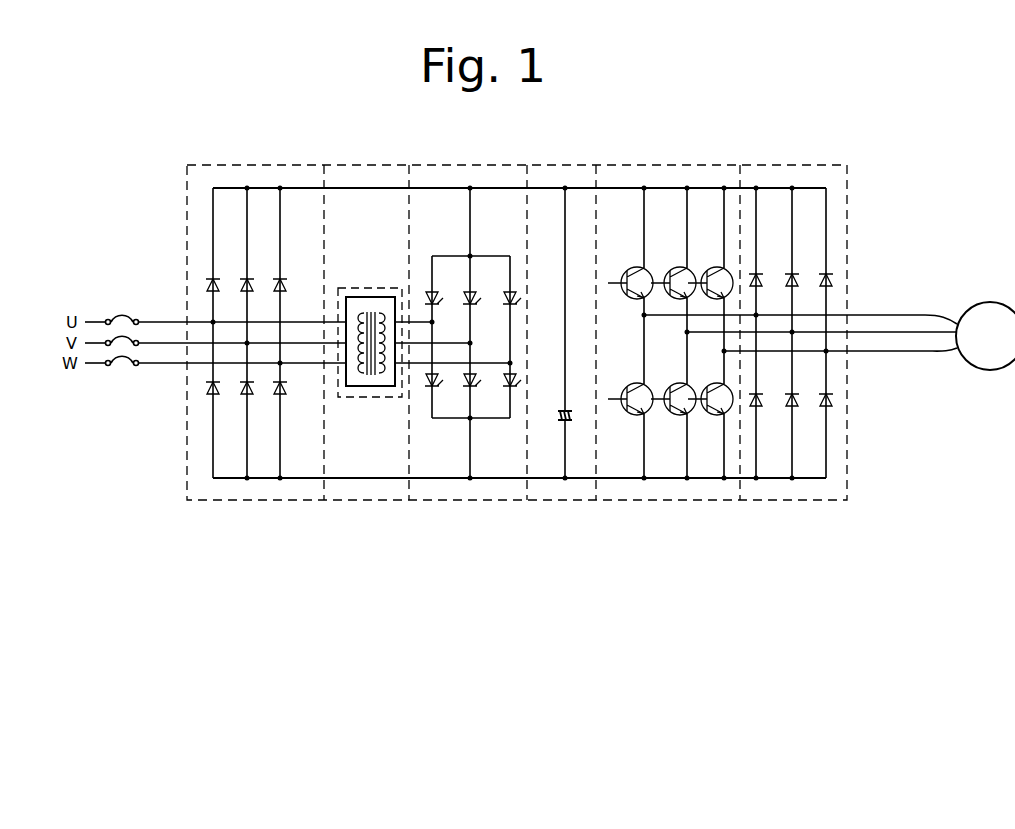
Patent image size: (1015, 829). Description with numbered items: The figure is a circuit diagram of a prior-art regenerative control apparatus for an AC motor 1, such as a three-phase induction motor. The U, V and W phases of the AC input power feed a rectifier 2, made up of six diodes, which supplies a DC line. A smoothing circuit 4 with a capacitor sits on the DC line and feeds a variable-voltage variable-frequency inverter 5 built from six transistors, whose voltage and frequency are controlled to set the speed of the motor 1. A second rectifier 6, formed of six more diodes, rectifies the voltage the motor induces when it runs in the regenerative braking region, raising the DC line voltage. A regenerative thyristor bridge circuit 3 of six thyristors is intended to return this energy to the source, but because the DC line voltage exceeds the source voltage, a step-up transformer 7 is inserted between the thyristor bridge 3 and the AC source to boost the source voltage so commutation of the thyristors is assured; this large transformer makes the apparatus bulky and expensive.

The AC motor 1 is at (994, 302).
The rectifier 2 is at (218, 165).
The regenerative thyristor bridge circuit 3 is at (497, 165).
The smoothing circuit 4 is at (571, 165).
The variable-voltage variable-frequency inverter 5 is at (661, 165).
The rectifier 6 is at (772, 165).
The step-up transformer 7 is at (363, 288).